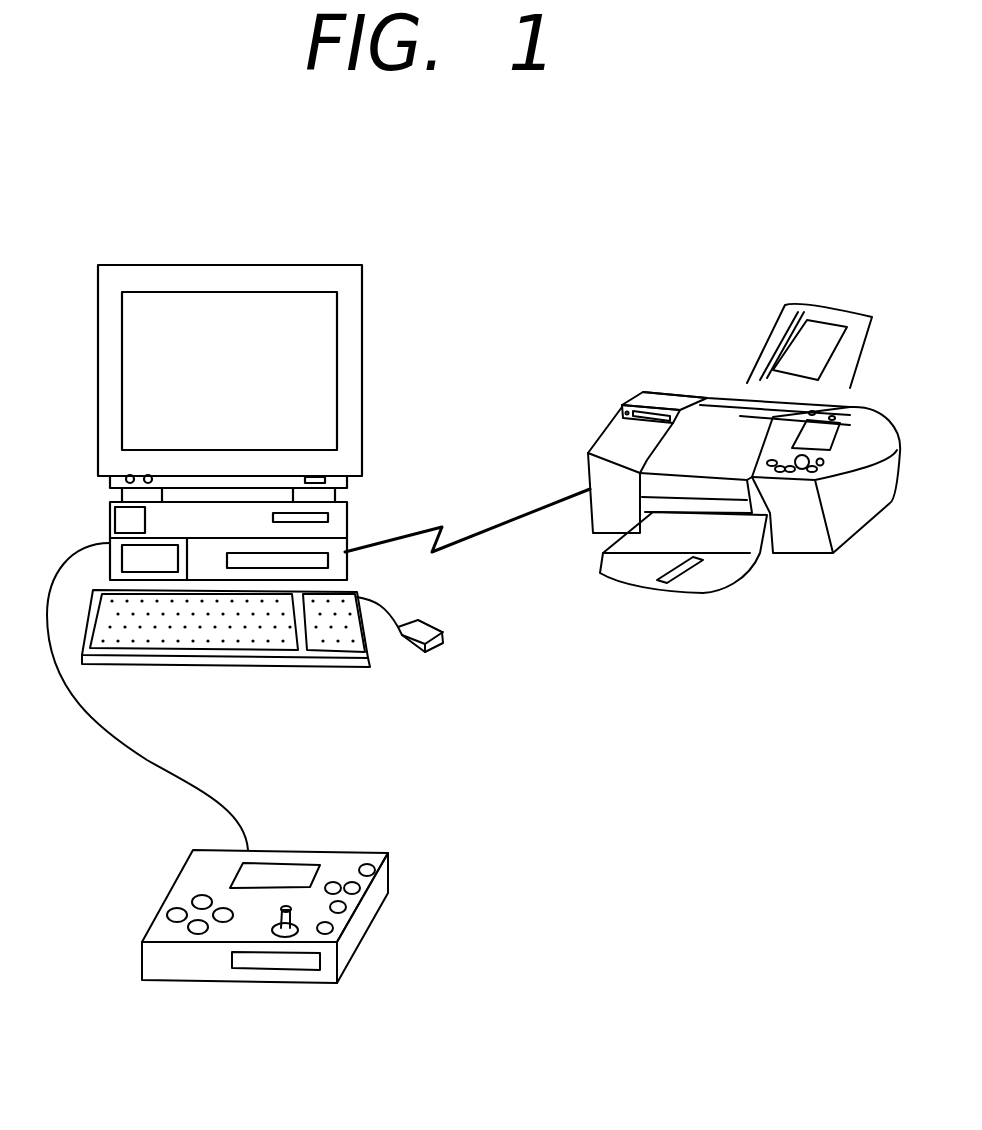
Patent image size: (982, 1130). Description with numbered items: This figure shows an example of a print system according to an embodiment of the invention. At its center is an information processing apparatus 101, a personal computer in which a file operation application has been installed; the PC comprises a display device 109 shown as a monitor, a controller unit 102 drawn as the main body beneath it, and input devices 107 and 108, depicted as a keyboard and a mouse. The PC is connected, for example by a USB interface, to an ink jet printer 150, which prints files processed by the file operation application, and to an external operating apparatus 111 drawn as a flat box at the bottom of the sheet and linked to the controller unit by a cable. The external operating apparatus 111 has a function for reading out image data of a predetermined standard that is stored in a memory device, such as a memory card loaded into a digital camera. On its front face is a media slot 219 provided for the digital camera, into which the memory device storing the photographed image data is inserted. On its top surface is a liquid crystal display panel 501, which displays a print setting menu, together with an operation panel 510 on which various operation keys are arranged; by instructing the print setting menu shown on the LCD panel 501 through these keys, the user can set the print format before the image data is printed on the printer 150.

The information processing apparatus 101 is at (257, 243).
The display device 109 is at (365, 355).
The controller unit 102 is at (345, 518).
The input device 107 is at (257, 661).
The input device 108 is at (441, 636).
The printer 150 is at (827, 303).
The external operating apparatus 111 is at (393, 872).
The liquid crystal display (LCD) panel 501 is at (282, 862).
The operation panel 510 is at (338, 872).
The media slot 219 is at (277, 967).